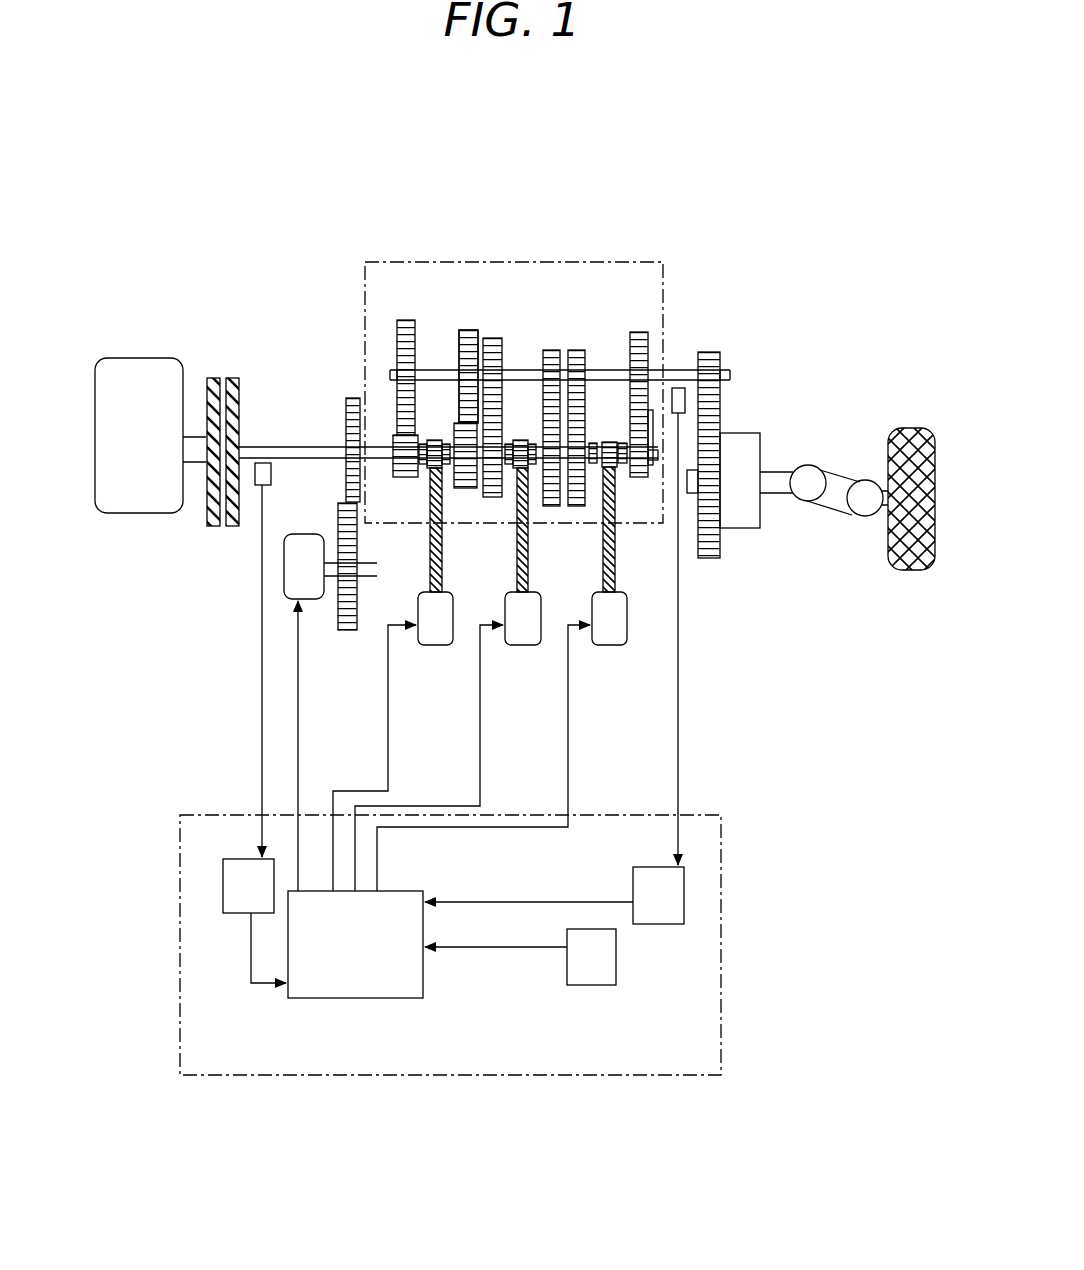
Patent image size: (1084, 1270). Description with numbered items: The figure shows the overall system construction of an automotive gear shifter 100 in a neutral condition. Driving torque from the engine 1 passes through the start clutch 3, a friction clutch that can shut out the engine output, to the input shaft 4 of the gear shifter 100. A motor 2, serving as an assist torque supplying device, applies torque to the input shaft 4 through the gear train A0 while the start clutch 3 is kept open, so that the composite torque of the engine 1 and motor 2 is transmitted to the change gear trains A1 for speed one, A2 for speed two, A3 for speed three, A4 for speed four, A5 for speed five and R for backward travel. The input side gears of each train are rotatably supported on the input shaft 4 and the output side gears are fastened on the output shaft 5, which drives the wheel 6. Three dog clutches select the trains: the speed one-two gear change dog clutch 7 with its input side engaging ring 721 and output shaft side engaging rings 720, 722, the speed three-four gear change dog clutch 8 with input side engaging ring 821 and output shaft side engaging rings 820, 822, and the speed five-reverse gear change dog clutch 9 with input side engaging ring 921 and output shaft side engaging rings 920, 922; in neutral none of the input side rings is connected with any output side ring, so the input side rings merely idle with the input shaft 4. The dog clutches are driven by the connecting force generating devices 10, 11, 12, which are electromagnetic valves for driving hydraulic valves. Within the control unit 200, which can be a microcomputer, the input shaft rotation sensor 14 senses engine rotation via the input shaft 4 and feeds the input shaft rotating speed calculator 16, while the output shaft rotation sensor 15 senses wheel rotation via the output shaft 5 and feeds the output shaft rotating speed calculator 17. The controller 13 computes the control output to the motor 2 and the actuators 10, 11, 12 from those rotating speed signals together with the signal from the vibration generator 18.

The engine 1 is at (170, 357).
The motor 2 is at (308, 600).
The start clutch 3 is at (230, 378).
The input shaft 4 is at (328, 446).
The output shaft 5 is at (661, 367).
The wheel 6 is at (913, 572).
The speed 1-2 gear change dog clutch 7 is at (396, 403).
The speed 3-4 gear change dog clutch 8 is at (525, 432).
The speed 5-R gear change dog clutch 9 is at (623, 406).
The speed 1-2 gear change connecting force generating device 10 is at (436, 646).
The speed 3-4 gear change connecting force generating device 11 is at (523, 646).
The speed 5-R gear change connecting force generating device 12 is at (609, 646).
The controller 13 is at (423, 985).
The input shaft rotation sensor 14 is at (262, 486).
The output shaft rotation sensor 15 is at (678, 386).
The input shaft rotating speed calculator 16 is at (222, 877).
The output shaft rotating speed calculator 17 is at (684, 902).
The vibration generator 18 is at (616, 968).
The gear shifter 100 is at (647, 262).
The control unit 200 is at (690, 1037).
The output shaft side engaging ring 720 is at (418, 477).
The input side engaging ring 721 is at (431, 436).
The output shaft side engaging ring 722 is at (447, 470).
The output shaft side engaging ring 820 is at (506, 470).
The input side engaging ring 821 is at (491, 335).
The output shaft side engaging ring 822 is at (533, 467).
The output shaft side engaging ring 920 is at (601, 468).
The input side engaging ring 921 is at (578, 347).
The output shaft side engaging ring 922 is at (624, 467).
The gear train A0 is at (336, 506).
The change gear train A1 is at (393, 332).
The change gear train A2 is at (460, 326).
The change gear train A3 is at (464, 325).
The change gear train A4 is at (533, 419).
The change gear train A5 is at (551, 347).
The change gear train R is at (638, 331).